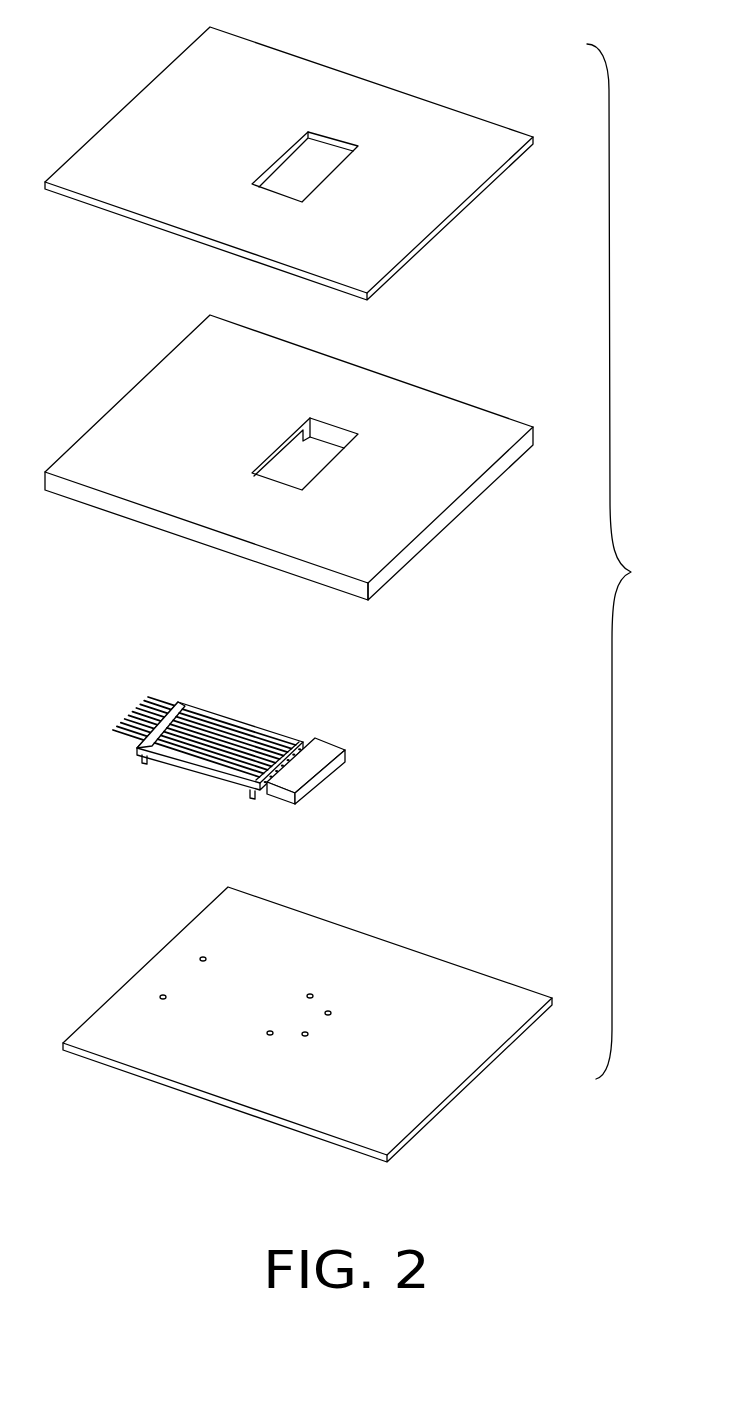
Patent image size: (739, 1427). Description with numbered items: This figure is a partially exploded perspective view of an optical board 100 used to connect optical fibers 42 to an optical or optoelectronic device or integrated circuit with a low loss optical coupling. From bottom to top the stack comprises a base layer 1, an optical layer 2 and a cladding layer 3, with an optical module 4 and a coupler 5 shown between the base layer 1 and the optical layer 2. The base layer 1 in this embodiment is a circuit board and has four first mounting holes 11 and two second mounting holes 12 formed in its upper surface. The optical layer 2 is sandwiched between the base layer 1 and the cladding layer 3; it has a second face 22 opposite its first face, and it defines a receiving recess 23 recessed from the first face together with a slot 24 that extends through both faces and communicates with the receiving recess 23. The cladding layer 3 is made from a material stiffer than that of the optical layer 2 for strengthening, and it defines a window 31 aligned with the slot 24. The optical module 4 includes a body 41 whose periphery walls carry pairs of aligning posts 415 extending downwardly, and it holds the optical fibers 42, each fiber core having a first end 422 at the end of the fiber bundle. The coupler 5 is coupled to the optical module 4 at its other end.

The optical board 100 is at (637, 561).
The base layer 1 is at (307, 1024).
The first mounting holes 11 is at (310, 994).
The second mounting holes 12 is at (304, 1036).
The optical layer 2 is at (313, 456).
The second face 22 is at (478, 443).
The receiving recess 23 is at (288, 452).
The slot 24 is at (315, 462).
The cladding layer 3 is at (289, 150).
The window 31 is at (308, 163).
The optical module 4 is at (190, 741).
The optical module body 41 is at (220, 779).
The aligning posts 415 is at (255, 797).
The optical fibers 42 is at (186, 725).
The first end 422 is at (120, 737).
The coupler 5 is at (342, 721).